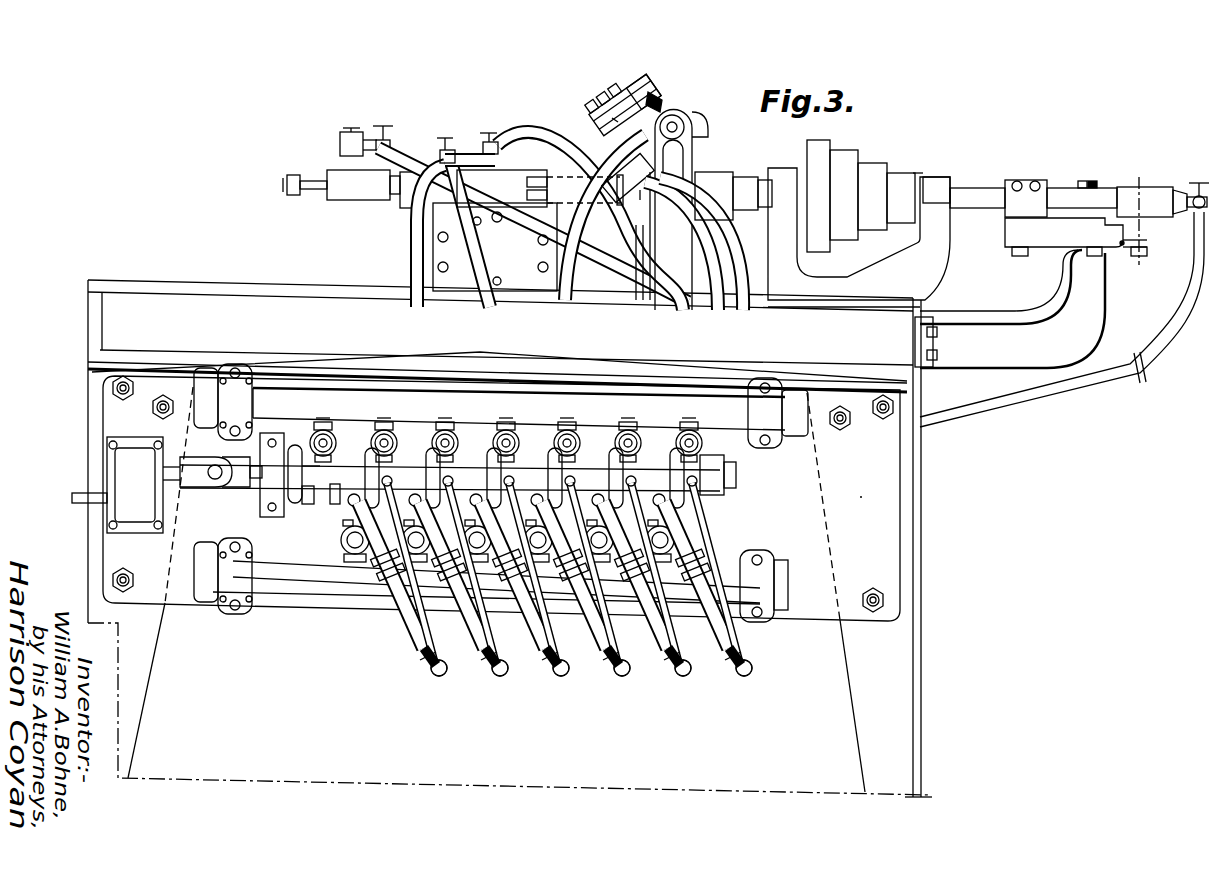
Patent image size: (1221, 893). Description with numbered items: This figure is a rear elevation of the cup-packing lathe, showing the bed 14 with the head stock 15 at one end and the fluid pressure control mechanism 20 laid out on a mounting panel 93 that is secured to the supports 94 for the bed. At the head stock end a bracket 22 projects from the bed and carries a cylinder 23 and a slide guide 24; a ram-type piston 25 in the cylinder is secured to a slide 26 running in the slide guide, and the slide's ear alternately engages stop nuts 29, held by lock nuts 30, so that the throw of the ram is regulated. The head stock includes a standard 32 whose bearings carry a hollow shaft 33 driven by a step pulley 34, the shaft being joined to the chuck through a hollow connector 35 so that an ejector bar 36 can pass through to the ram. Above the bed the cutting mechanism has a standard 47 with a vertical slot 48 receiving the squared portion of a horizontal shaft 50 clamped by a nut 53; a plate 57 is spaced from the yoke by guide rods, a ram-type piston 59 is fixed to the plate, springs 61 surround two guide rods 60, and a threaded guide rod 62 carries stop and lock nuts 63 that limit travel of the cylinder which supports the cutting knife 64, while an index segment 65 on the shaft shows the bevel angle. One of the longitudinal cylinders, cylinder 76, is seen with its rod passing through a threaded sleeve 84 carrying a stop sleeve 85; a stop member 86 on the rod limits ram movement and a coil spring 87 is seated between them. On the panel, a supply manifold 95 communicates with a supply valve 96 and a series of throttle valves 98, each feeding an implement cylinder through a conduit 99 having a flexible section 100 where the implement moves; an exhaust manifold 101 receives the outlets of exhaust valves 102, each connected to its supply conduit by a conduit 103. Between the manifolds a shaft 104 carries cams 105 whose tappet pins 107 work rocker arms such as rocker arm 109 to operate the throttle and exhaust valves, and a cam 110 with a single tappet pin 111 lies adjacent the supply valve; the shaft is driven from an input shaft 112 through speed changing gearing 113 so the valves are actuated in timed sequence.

The bed 14 is at (512, 538).
The head stock 15 is at (917, 160).
The fluid pressure control mechanism 20 is at (860, 497).
The bracket 22 is at (980, 310).
The cylinder 23 is at (1150, 188).
The slide guide 24 is at (1060, 228).
The ram-type piston 25 is at (1062, 188).
The slide 26 is at (1022, 184).
The stop nuts 29 is at (1085, 176).
The lock nuts 30 is at (1094, 181).
The standard 32 is at (775, 236).
The hollow shaft 33 is at (950, 185).
The step pulley 34 is at (872, 162).
The connector 35 is at (745, 176).
The ejector bar 36 is at (995, 205).
The standard 47 is at (648, 233).
The vertical slot 48 is at (688, 154).
The shaft 50 is at (685, 126).
The nut 53 is at (680, 120).
The plate 57 is at (610, 90).
The ram-type piston 59 is at (643, 91).
The guide rods 60 is at (615, 120).
The springs 61 is at (628, 178).
The threaded guide rod 62 is at (653, 92).
The stop and lock nuts 63 is at (668, 112).
The cutting knife 64 is at (640, 192).
The index segment 65 is at (703, 112).
The cylinder 76 is at (550, 221).
The threaded sleeve 84 is at (394, 200).
The stop sleeve 85 is at (358, 200).
The stop member 86 is at (293, 198).
The coil spring 87 is at (320, 192).
The mounting panel 93 is at (501, 498).
The supports 94 is at (895, 668).
The supply manifold 95 is at (519, 409).
The supply valve 96 is at (332, 438).
The throttle valves 98 is at (395, 438).
The conduit 99 is at (420, 600).
The flexible section 100 is at (405, 146).
The exhaust manifold 101 is at (300, 596).
The exhaust valves 102 is at (350, 560).
The conduit 103 is at (425, 648).
The shaft 104 is at (277, 500).
The cams 105 is at (540, 454).
The tappet pins 107 is at (358, 452).
The rocker arm 109 is at (458, 478).
The cam 110 is at (296, 443).
The tappet pin 111 is at (320, 497).
The input shaft 112 is at (85, 500).
The speed changing gearing 113 is at (130, 470).